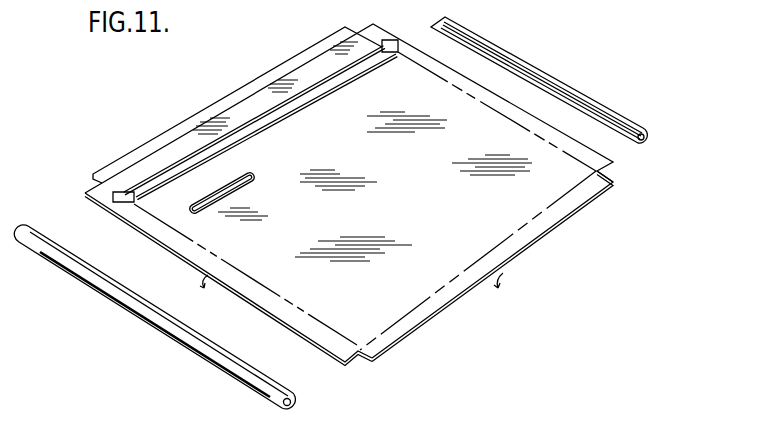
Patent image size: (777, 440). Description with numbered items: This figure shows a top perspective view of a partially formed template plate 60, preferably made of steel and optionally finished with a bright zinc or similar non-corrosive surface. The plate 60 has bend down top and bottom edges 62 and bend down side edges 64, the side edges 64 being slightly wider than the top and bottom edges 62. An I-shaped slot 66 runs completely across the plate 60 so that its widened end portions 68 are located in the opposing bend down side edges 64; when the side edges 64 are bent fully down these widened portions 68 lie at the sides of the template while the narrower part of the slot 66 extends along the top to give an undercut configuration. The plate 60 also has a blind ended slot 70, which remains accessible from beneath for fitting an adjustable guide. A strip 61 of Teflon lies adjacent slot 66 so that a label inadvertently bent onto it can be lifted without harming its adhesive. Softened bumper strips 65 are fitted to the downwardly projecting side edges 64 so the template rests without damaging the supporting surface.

The template base or plate 60 is at (482, 125).
The strip of Teflon 61 is at (322, 112).
The bend down top and bottom edges 62 is at (212, 108).
The bend down side edges 64 is at (455, 78).
The bumper strips 65 is at (598, 105).
The I-shaped slot 66 is at (337, 72).
The widened portions of slot 68 is at (365, 40).
The blind ended slot 70 is at (256, 177).